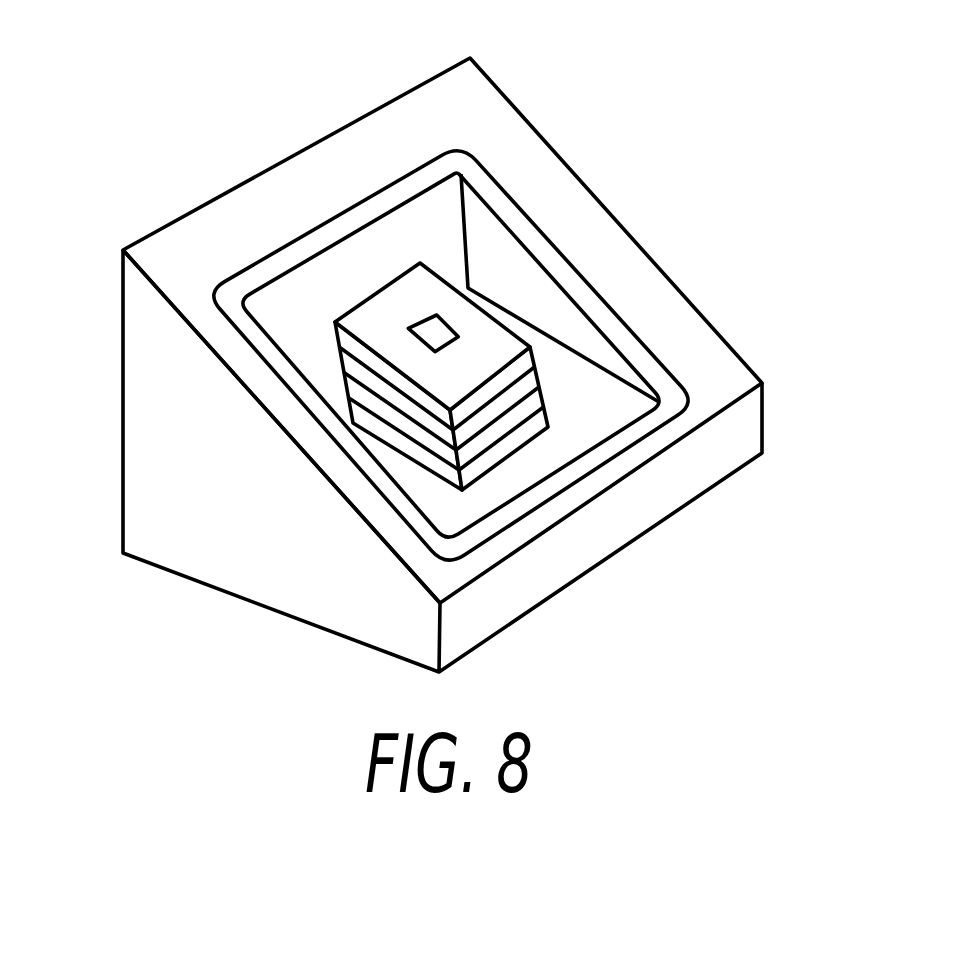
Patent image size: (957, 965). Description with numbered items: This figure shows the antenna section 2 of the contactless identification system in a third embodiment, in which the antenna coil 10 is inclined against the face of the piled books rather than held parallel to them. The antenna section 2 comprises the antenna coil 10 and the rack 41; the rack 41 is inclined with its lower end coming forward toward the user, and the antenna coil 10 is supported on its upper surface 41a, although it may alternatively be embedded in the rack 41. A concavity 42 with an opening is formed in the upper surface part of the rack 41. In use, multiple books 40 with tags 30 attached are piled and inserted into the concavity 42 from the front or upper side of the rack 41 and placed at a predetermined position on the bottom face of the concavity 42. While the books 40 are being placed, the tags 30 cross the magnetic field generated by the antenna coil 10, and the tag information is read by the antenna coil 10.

The antenna section 2 is at (442, 346).
The antenna coil 10 is at (347, 227).
The tag 30 is at (493, 313).
The book 40 is at (425, 327).
The rack 41 is at (163, 495).
The upper surface 41a is at (695, 340).
The concavity 42 is at (590, 415).